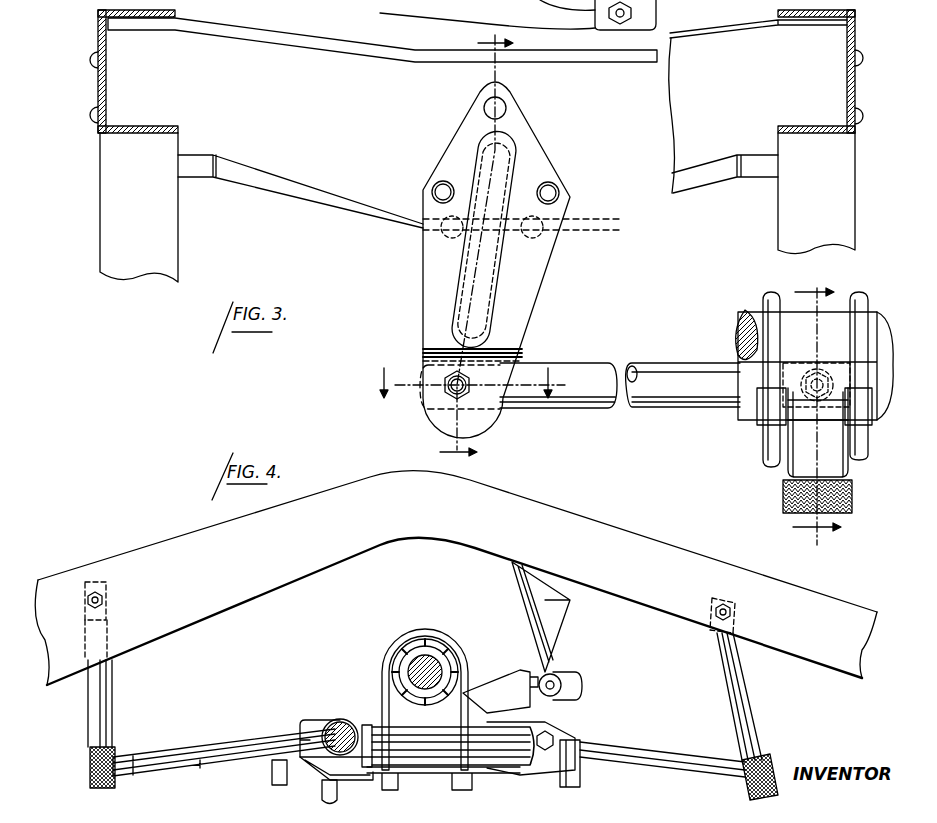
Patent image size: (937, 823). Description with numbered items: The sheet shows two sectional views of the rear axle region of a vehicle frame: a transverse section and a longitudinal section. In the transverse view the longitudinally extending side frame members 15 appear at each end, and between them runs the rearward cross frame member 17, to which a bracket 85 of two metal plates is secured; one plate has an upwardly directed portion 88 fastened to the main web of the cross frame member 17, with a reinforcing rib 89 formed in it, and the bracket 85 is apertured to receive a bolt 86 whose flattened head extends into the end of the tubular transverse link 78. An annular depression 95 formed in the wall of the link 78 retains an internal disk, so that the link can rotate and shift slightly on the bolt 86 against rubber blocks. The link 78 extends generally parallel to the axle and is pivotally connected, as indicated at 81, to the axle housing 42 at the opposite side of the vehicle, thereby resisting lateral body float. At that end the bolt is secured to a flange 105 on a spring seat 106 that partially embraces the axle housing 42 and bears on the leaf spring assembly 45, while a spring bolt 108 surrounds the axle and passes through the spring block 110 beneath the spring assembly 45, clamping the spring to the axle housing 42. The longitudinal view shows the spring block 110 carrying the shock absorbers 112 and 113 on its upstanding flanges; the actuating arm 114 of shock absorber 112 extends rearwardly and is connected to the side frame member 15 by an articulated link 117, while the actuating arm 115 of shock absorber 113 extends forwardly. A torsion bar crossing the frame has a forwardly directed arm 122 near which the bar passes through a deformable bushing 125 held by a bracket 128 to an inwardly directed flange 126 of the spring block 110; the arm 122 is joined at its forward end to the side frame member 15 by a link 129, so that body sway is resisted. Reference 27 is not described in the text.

In FIG. 3, the side frame member 15 is at (98, 133).
In FIG. 4, the side frame member 15 is at (172, 550).
In FIG. 3, the rearward cross frame member 17 is at (303, 170).
In FIG. 4, the rearward cross frame member 17 is at (547, 623).
In FIG. 3, the body plate 27 is at (297, 0).
In FIG. 3, the axle housing 42 is at (753, 310).
In FIG. 4, the axle housing 42 is at (428, 640).
In FIG. 3, the leaf spring assembly 45 is at (783, 502).
In FIG. 4, the leaf spring assembly 45 is at (433, 752).
In FIG. 3, the transverse link 78 is at (647, 367).
In FIG. 4, the transverse link 78 is at (577, 687).
In FIG. 3, the pivotal connection 81 is at (812, 363).
In FIG. 3, the bracket 85 is at (430, 285).
In FIG. 3, the bolt 86 is at (450, 390).
In FIG. 3, the upwardly directed portion 88 is at (537, 157).
In FIG. 3, the reinforcing rib 89 is at (507, 258).
In FIG. 3, the annular depression 95 is at (503, 412).
In FIG. 4, the flange 105 is at (527, 692).
In FIG. 3, the spring seat 106 is at (787, 473).
In FIG. 4, the spring seat 106 is at (405, 707).
In FIG. 3, the spring bolt 108 is at (772, 295).
In FIG. 4, the spring bolt 108 is at (410, 640).
In FIG. 4, the spring block 110 is at (485, 769).
In FIG. 4, the shock absorber 112 is at (567, 747).
In FIG. 4, the shock absorber 113 is at (293, 770).
In FIG. 4, the actuating arm 114 is at (657, 758).
In FIG. 4, the actuating arm 115 is at (258, 728).
In FIG. 4, the link 117 is at (730, 678).
In FIG. 4, the arm 122 is at (163, 757).
In FIG. 4, the bushing 125 is at (340, 722).
In FIG. 4, the inwardly directed flange 126 is at (350, 760).
In FIG. 4, the bracket 128 is at (307, 720).
In FIG. 4, the link 129 is at (110, 679).